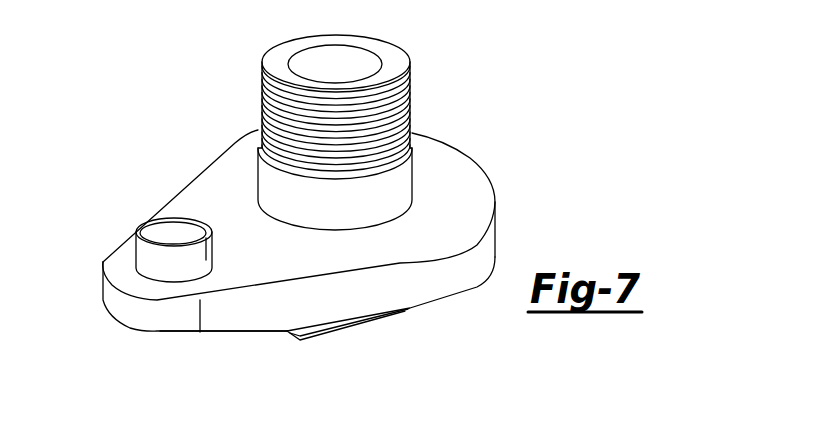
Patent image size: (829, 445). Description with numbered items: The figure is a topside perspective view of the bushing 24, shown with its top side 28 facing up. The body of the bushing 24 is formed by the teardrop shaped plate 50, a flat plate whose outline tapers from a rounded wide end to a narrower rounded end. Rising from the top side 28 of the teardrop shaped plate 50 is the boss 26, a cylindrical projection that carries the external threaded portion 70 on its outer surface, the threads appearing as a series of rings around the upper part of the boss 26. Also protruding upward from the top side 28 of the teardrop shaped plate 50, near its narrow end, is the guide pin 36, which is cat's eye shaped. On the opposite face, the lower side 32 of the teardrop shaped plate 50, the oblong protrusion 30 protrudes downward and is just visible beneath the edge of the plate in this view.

The bushing 24 is at (485, 112).
The boss 26 is at (363, 197).
The top side 28 is at (468, 183).
The oblong protrusion 30 is at (340, 328).
The lower side 32 is at (217, 333).
The guide pin 36 is at (175, 232).
The teardrop shaped plate 50 is at (485, 247).
The external threaded portion 70 is at (265, 119).